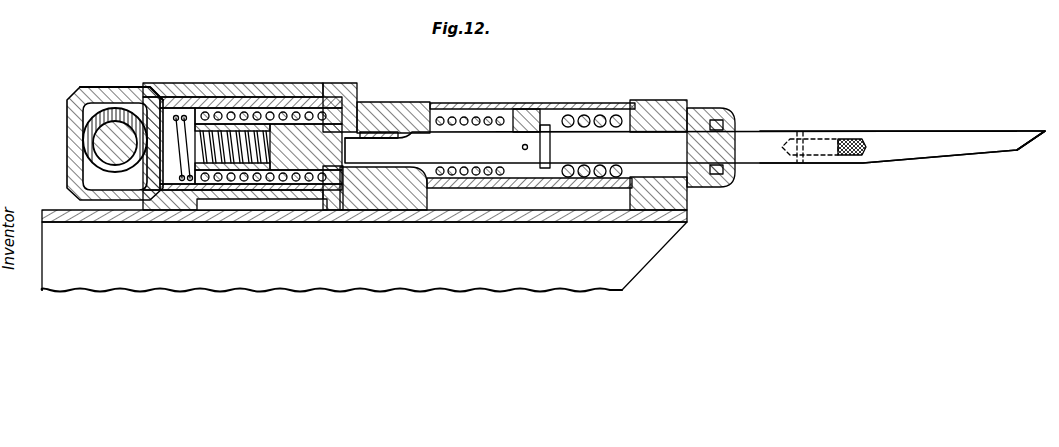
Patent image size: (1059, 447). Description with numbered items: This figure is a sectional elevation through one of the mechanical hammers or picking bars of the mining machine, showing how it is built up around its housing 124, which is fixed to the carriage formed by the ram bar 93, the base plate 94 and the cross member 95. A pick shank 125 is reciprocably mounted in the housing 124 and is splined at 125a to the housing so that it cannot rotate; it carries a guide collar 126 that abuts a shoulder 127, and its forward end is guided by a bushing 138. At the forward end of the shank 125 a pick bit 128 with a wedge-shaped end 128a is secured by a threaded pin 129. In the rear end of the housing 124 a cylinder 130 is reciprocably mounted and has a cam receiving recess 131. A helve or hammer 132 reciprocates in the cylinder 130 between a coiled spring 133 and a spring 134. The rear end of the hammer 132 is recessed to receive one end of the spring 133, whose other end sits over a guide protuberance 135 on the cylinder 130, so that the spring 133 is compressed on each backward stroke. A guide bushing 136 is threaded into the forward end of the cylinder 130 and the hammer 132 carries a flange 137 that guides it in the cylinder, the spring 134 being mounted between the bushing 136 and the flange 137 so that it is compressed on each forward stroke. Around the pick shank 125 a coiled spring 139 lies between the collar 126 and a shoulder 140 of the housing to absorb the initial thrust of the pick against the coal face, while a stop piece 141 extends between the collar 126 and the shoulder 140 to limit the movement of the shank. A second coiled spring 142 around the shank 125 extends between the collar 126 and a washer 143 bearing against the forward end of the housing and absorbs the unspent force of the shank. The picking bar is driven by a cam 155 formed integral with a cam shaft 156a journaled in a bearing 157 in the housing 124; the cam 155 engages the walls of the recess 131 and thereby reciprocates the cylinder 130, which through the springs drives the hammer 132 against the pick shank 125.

The ram bar 93 is at (623, 270).
The base plate 94 is at (663, 222).
The cross member 95 is at (652, 100).
The housing 124 is at (176, 95).
The pick shank 125 is at (758, 156).
The spline 125a is at (382, 165).
The guide collar 126 is at (525, 110).
The shoulder 127 is at (547, 170).
The pick bit 128 is at (908, 153).
The wedge-shaped end 128a is at (1023, 143).
The threaded pin 129 is at (812, 140).
The cylinder 130 is at (157, 200).
The cam receiving recess 131 is at (104, 187).
The helve or hammer 132 is at (290, 200).
The coiled spring 133 is at (187, 190).
The spring 134 is at (262, 120).
The guide protuberance 135 is at (205, 108).
The guide bushing 136 is at (330, 88).
The flange 137 is at (212, 128).
The bushing 138 is at (683, 105).
The coiled spring 139 is at (473, 190).
The shoulder 140 is at (422, 208).
The stop piece 141 is at (478, 110).
The second coiled spring 142 is at (592, 110).
The washer 143 is at (630, 195).
The cam 155 is at (100, 112).
The cam shaft 156a is at (110, 138).
The bearing 157 is at (82, 90).